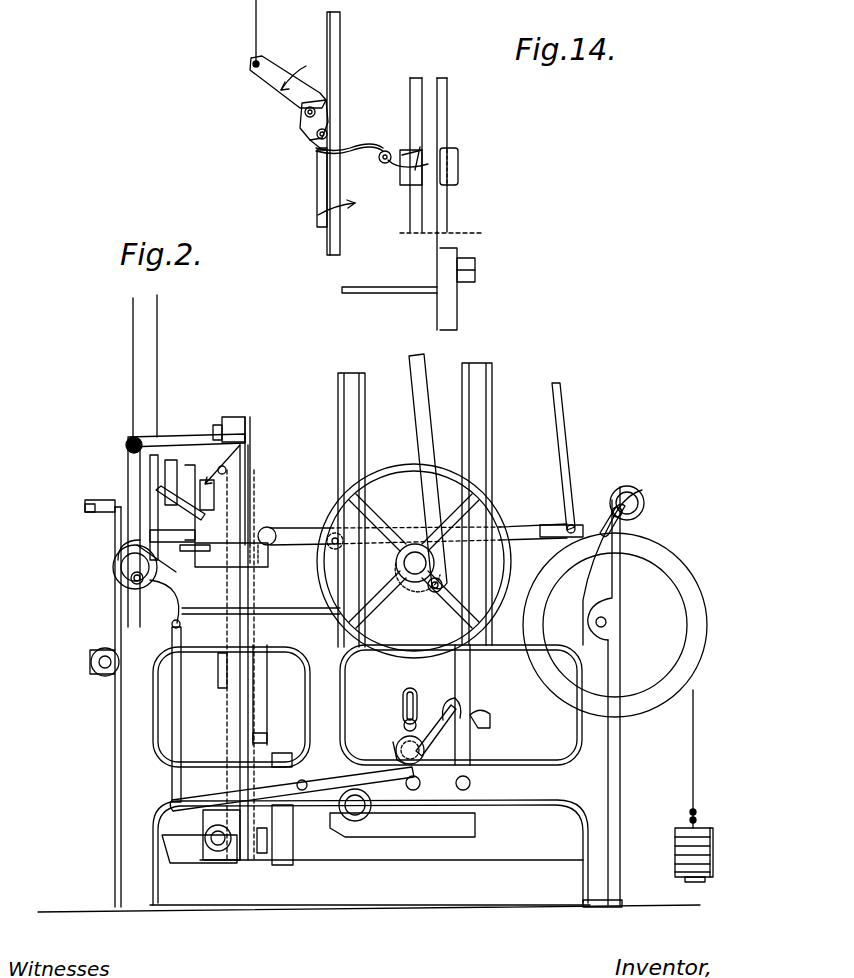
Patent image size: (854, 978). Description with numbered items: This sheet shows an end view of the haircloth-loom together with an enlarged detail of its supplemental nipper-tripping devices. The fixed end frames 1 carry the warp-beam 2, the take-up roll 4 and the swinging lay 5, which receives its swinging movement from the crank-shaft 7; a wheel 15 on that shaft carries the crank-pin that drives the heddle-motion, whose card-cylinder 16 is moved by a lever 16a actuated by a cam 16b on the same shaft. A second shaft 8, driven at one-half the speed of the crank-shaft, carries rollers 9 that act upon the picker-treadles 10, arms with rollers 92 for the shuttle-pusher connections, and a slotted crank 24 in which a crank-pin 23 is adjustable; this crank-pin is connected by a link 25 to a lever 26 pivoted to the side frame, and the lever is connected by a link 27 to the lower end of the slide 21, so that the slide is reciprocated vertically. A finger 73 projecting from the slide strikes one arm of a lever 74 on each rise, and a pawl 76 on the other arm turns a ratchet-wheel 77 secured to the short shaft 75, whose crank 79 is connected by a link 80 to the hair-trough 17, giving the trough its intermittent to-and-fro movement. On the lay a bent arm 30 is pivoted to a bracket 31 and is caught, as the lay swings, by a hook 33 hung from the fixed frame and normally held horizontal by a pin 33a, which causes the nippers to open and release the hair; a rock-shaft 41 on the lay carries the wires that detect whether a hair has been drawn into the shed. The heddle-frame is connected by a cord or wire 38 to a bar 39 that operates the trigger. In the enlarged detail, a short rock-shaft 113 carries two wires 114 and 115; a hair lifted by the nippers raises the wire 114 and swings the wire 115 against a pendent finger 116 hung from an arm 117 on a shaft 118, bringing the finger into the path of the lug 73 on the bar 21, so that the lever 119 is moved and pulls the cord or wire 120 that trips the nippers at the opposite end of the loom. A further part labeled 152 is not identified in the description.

In FIG. 14, the cord or wire 120 is at (256, 28).
In FIG. 2, the cord or wire 120 is at (133, 398).
In FIG. 14, the arm 119 is at (272, 80).
In FIG. 14, the shaft 118 is at (300, 112).
In FIG. 14, the arm 117 is at (306, 126).
In FIG. 14, the swinging finger 116 is at (317, 180).
In FIG. 14, the wire 115 is at (362, 142).
In FIG. 14, the short rock-shaft 113 is at (380, 160).
In FIG. 14, the wire 114 is at (400, 170).
In FIG. 14, the slide 21 is at (447, 128).
In FIG. 2, the slide 21 is at (239, 655).
In FIG. 14, the finger 73 is at (398, 292).
In FIG. 2, the fixed end frame 1 is at (369, 637).
In FIG. 2, the bracket 152 is at (78, 505).
In FIG. 2, the cord or wire 38 is at (157, 347).
In FIG. 2, the bar 39 is at (157, 434).
In FIG. 2, the pin 33a is at (130, 452).
In FIG. 2, the hook 33 is at (104, 662).
In FIG. 2, the swinging lay 5 is at (235, 418).
In FIG. 2, the bent arm 30 is at (257, 481).
In FIG. 2, the rock-shaft 41 is at (218, 466).
In FIG. 2, the bracket 31 is at (186, 507).
In FIG. 2, the take-up roll 4 is at (153, 550).
In FIG. 2, the pivoted pawl 76 is at (122, 548).
In FIG. 2, the ratchet-wheel 77 is at (113, 564).
In FIG. 2, the lever 74 is at (122, 570).
In FIG. 2, the crank 79 is at (132, 580).
In FIG. 2, the link 80 is at (150, 587).
In FIG. 2, the hair-trough 17 is at (235, 547).
In FIG. 2, the short shaft 75 is at (163, 711).
In FIG. 2, the link 27 is at (175, 727).
In FIG. 2, the lever 26 is at (328, 776).
In FIG. 2, the rollers 92 is at (360, 810).
In FIG. 2, the treadles 10 is at (402, 834).
In FIG. 2, the wheel 15 is at (414, 561).
In FIG. 2, the crank-shaft 7 is at (417, 570).
In FIG. 2, the card-cylinder 16 is at (428, 471).
In FIG. 2, the lever 16a is at (426, 466).
In FIG. 2, the cam 16b is at (440, 574).
In FIG. 2, the warp-beam 2 is at (618, 684).
In FIG. 2, the slotted crank 24 is at (403, 698).
In FIG. 2, the crank-pin 23 is at (404, 724).
In FIG. 2, the link 25 is at (396, 747).
In FIG. 2, the shaft 8 is at (425, 752).
In FIG. 2, the rollers 9 is at (474, 726).